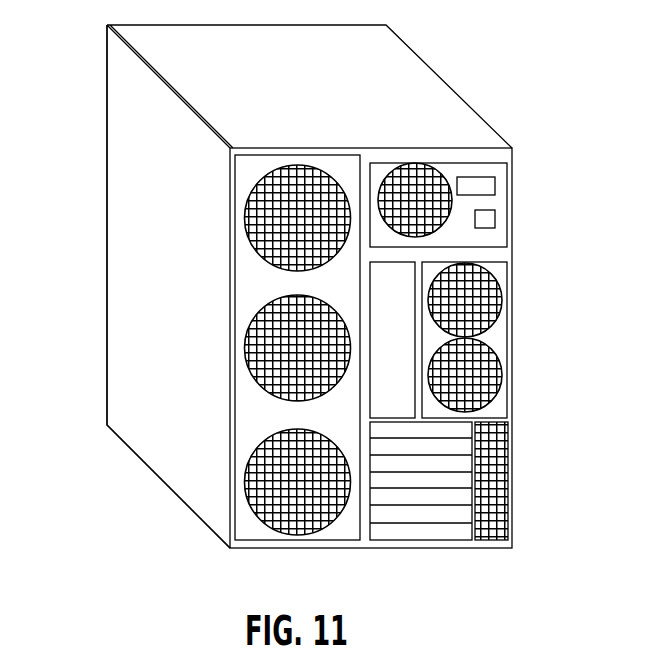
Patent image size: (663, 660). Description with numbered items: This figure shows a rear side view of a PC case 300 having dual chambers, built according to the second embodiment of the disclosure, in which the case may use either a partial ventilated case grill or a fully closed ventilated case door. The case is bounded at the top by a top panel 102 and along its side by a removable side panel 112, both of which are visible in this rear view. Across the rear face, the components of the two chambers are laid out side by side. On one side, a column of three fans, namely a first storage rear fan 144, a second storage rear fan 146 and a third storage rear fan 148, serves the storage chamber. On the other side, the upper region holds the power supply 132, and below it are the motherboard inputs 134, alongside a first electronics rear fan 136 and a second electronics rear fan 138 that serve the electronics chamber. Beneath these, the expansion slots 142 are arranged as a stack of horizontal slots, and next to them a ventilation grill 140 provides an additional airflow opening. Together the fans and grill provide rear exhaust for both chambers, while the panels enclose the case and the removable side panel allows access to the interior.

The computer system 300 is at (556, 70).
The top panel 102 is at (405, 58).
The removable side panel 112 is at (127, 325).
The power supply 132 is at (450, 202).
The motherboard inputs 134 is at (400, 272).
The first electronics rear fan 136 is at (503, 300).
The second electronics rear fan 138 is at (500, 375).
The ventilation grill 140 is at (508, 478).
The expansion slots 142 is at (417, 540).
The first storage rear fan 144 is at (245, 217).
The second storage rear fan 146 is at (245, 347).
The third storage rear fan 148 is at (247, 483).